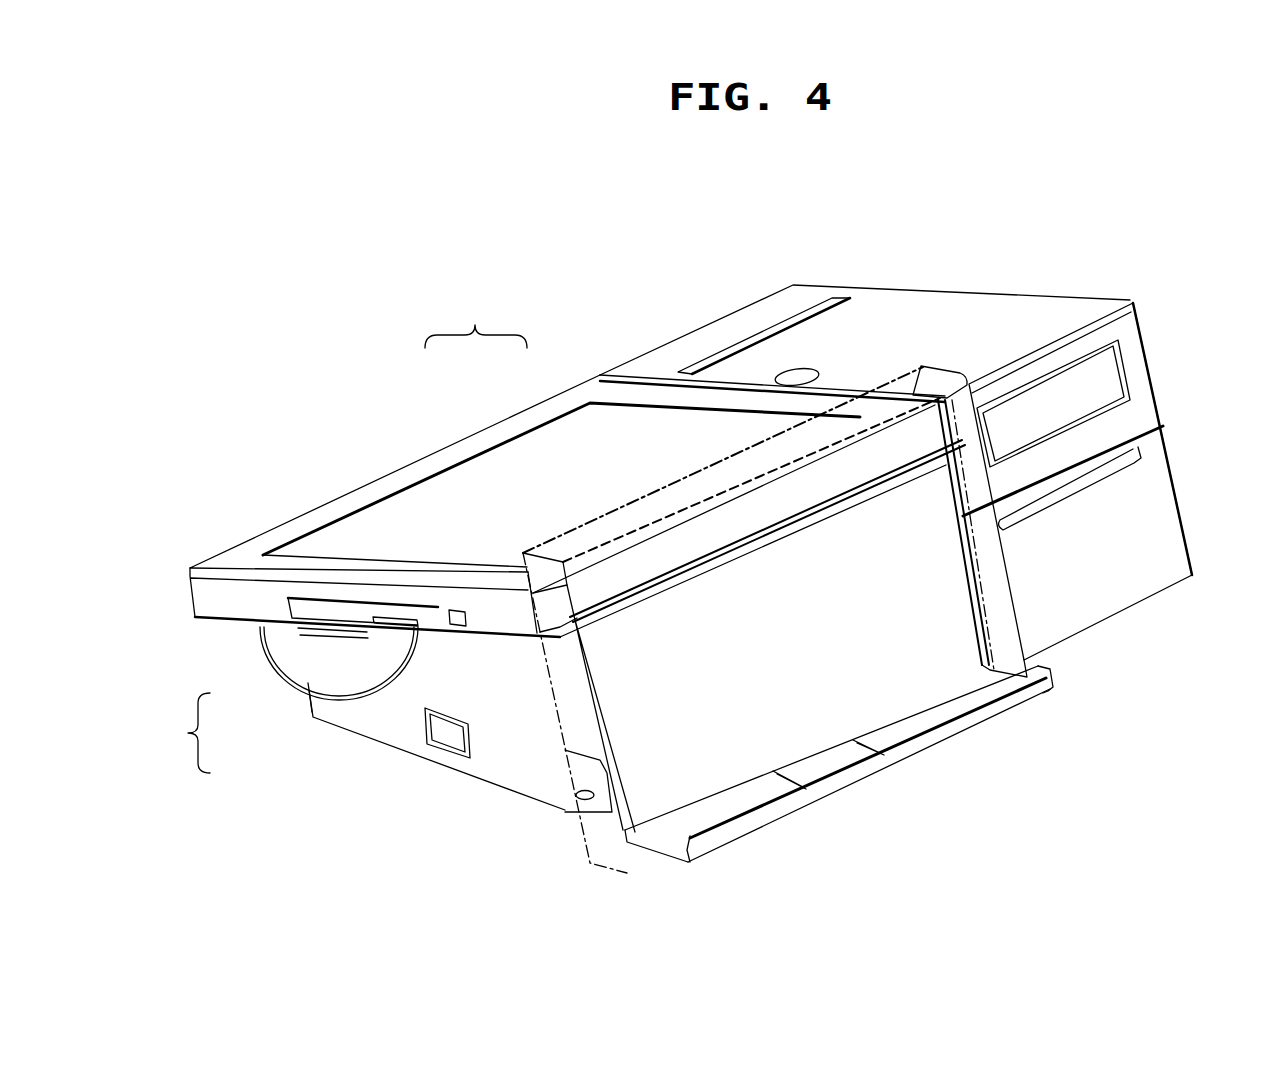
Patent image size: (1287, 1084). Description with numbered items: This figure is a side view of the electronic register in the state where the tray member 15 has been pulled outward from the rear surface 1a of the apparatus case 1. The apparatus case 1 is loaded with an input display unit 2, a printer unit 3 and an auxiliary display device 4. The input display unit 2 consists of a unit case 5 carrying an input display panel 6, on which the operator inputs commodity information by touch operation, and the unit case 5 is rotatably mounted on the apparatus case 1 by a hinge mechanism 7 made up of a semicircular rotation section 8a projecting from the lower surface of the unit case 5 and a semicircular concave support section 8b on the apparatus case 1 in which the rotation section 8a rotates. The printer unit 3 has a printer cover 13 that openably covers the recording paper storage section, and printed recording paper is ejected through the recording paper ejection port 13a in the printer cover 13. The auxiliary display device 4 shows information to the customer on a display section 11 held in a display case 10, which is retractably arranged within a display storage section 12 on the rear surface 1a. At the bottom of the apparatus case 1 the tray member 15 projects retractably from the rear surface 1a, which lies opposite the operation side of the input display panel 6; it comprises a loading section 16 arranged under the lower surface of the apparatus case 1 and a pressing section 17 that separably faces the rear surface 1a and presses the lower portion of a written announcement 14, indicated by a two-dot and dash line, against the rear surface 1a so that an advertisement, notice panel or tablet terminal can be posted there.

The apparatus case 1 is at (423, 753).
The rear surface 1a is at (888, 687).
The input display unit 2 is at (577, 465).
The printer unit 3 is at (932, 290).
The auxiliary display device 4 is at (1130, 300).
The unit case 5 is at (448, 452).
The input display panel 6 is at (510, 467).
The hinge mechanism 7 is at (291, 700).
The rotation section 8a is at (290, 658).
The support section 8b is at (330, 712).
The display case 10 is at (1133, 348).
The display section 11 is at (1113, 387).
The display storage section 12 is at (1043, 328).
The printer cover 13 is at (967, 308).
The recording paper ejection port 13a is at (782, 330).
The written announcement 14 is at (560, 718).
The tray member 15 is at (823, 806).
The loading section 16 is at (674, 836).
The pressing section 17 is at (743, 828).